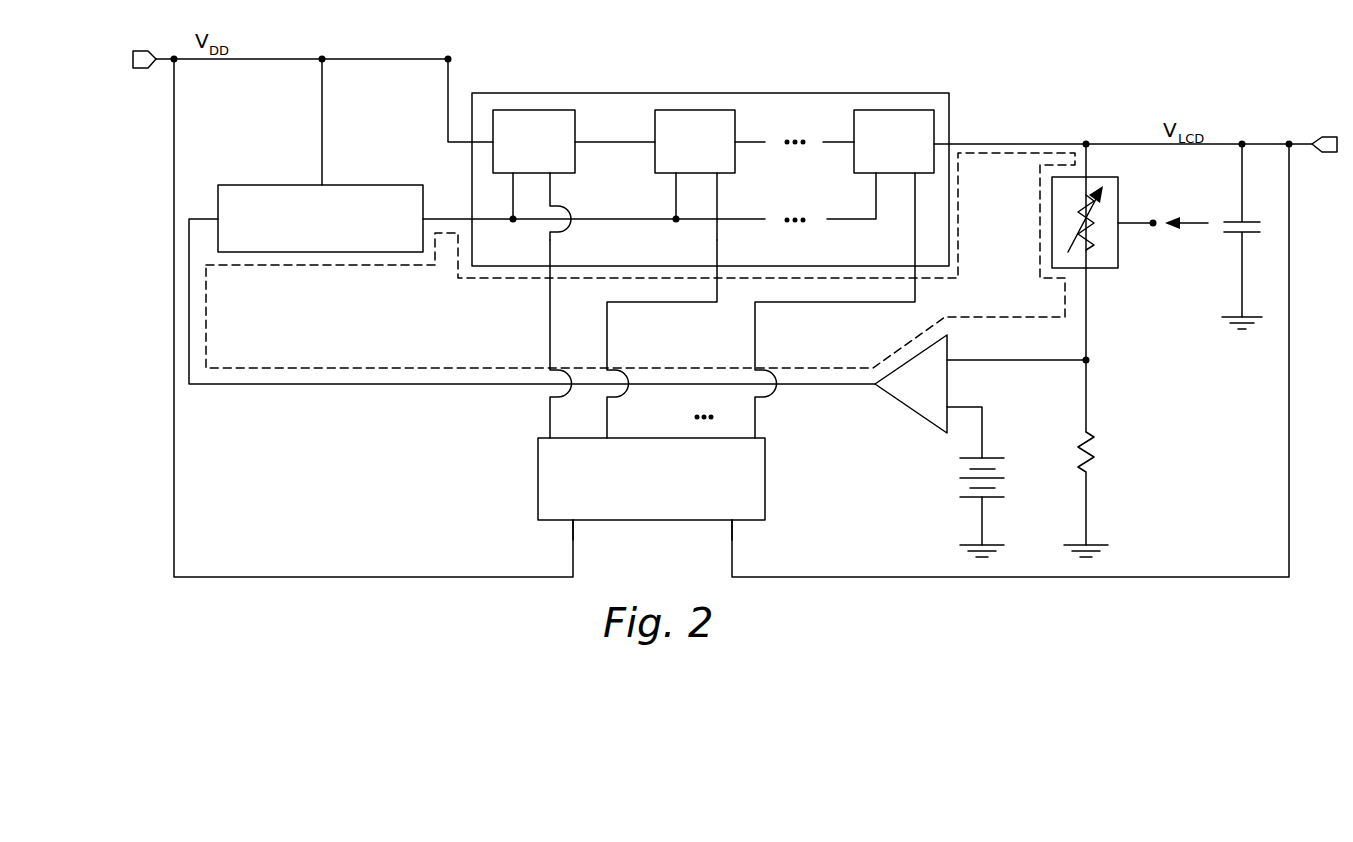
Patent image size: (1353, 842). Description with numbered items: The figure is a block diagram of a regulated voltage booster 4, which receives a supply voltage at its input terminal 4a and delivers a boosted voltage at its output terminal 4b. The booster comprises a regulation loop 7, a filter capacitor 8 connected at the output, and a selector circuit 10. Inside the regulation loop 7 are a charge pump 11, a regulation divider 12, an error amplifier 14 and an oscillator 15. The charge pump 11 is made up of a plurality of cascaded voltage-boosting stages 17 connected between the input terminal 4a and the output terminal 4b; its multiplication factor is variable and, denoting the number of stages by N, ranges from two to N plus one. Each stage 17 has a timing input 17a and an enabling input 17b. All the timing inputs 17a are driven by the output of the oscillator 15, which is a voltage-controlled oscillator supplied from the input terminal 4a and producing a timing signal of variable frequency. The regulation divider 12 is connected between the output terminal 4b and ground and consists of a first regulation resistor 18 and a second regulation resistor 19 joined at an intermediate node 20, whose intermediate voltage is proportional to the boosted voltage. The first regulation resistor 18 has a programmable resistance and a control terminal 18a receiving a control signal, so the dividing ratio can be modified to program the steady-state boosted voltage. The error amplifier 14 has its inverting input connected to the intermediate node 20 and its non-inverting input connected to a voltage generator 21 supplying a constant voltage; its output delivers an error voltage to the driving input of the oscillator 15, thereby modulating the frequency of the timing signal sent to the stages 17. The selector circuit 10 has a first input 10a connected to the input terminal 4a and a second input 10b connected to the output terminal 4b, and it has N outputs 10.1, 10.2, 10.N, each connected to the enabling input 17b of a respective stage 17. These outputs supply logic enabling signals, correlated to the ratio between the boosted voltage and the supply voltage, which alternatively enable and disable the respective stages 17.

The regulated voltage booster 4 is at (153, 513).
The input terminal 4a is at (141, 69).
The output terminal 4b is at (1327, 137).
The regulation loop 7 is at (228, 328).
The filter capacitor 8 is at (1250, 233).
The selector circuit 10 is at (755, 507).
The first input 10a is at (573, 530).
The second input 10b is at (732, 530).
The first output 10.1 is at (548, 398).
The second output 10.2 is at (609, 427).
The N-th output 10.N is at (757, 405).
The charge pump 11 is at (784, 97).
The regulation divider 12 is at (1188, 344).
The error amplifier 14 is at (912, 403).
The oscillator 15 is at (344, 197).
The voltage-boosting stage 17 is at (527, 113).
The timing input 17a is at (511, 201).
The enabling input 17b is at (717, 195).
The first regulation resistor 18 is at (1108, 259).
The control terminal 18a is at (1153, 227).
The second regulation resistor 19 is at (1093, 461).
The intermediate node 20 is at (1088, 360).
The voltage generator 21 is at (962, 478).